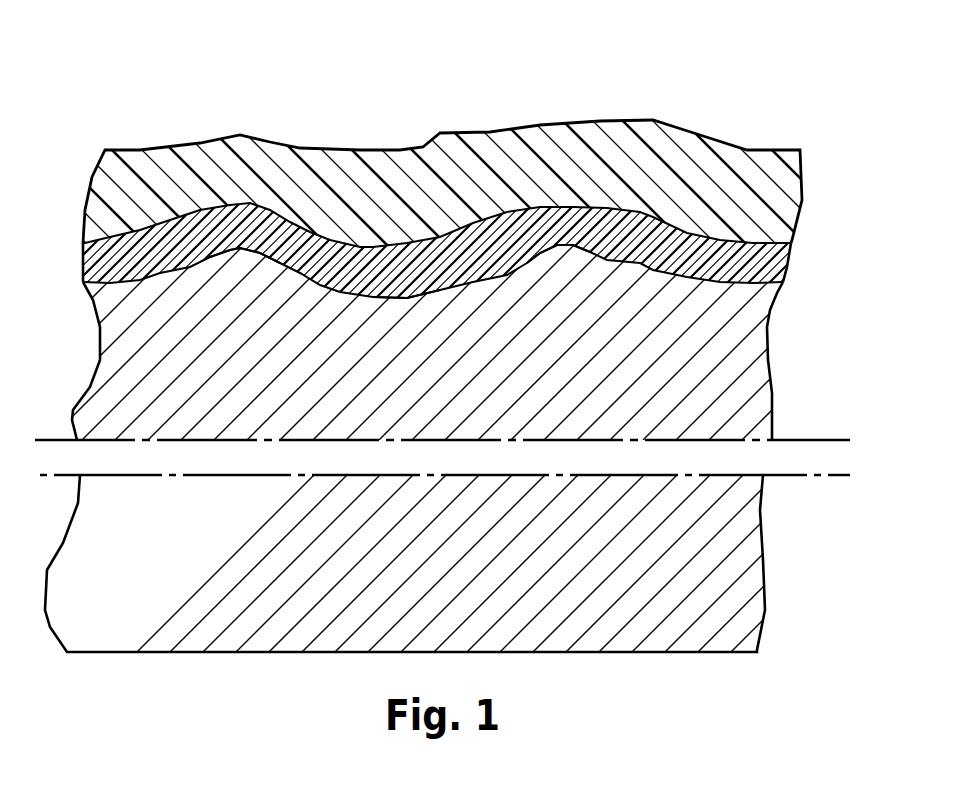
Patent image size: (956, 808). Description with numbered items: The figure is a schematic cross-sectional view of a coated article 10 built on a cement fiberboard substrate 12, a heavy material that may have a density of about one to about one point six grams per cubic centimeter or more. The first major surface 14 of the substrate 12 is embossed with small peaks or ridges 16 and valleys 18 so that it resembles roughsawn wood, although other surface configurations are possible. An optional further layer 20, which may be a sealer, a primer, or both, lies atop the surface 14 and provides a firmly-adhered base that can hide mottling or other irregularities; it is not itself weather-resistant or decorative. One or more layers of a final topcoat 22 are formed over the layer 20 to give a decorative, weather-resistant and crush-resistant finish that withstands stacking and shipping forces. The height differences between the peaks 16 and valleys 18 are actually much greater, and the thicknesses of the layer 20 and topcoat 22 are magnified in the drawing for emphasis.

The coated article 10 is at (478, 326).
The cement fiberboard substrate 12 is at (745, 385).
The first major surface 14 is at (737, 288).
The peaks or ridges 16 is at (246, 250).
The valleys 18 is at (428, 298).
The further layer 20 is at (777, 273).
The final topcoat 22 is at (783, 212).